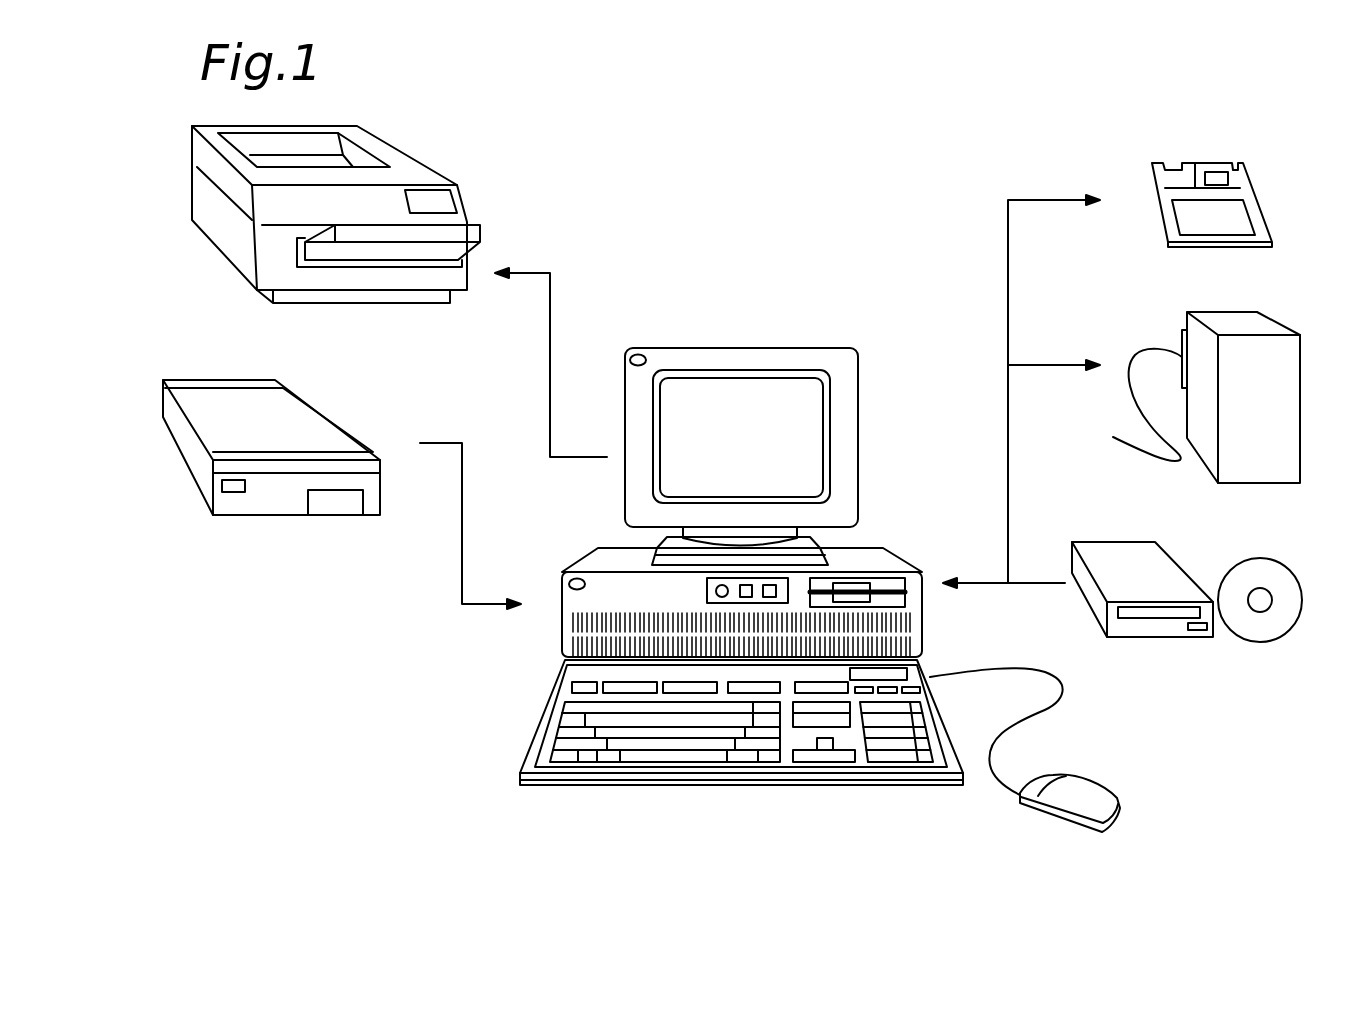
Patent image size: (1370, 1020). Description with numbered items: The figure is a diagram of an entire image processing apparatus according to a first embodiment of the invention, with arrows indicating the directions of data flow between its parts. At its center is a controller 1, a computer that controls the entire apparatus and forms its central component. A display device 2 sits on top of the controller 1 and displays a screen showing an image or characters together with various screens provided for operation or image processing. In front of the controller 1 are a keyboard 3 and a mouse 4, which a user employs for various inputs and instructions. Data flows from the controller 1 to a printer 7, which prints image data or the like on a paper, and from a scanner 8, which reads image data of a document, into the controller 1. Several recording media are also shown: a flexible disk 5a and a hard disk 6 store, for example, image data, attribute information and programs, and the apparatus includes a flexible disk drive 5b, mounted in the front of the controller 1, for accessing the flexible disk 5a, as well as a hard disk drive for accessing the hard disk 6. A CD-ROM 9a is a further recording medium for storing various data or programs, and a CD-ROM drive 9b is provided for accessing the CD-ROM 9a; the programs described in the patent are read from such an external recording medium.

The controller 1 is at (562, 603).
The display device 2 is at (617, 428).
The keyboard 3 is at (550, 690).
The mouse 4 is at (1063, 807).
The flexible disk 5a is at (1240, 218).
The flexible disk drive 5b is at (887, 583).
The hard disk 6 is at (1258, 322).
The printer 7 is at (420, 172).
The scanner 8 is at (307, 423).
The CD-ROM 9a is at (1283, 577).
The CD-ROM drive 9b is at (1127, 560).